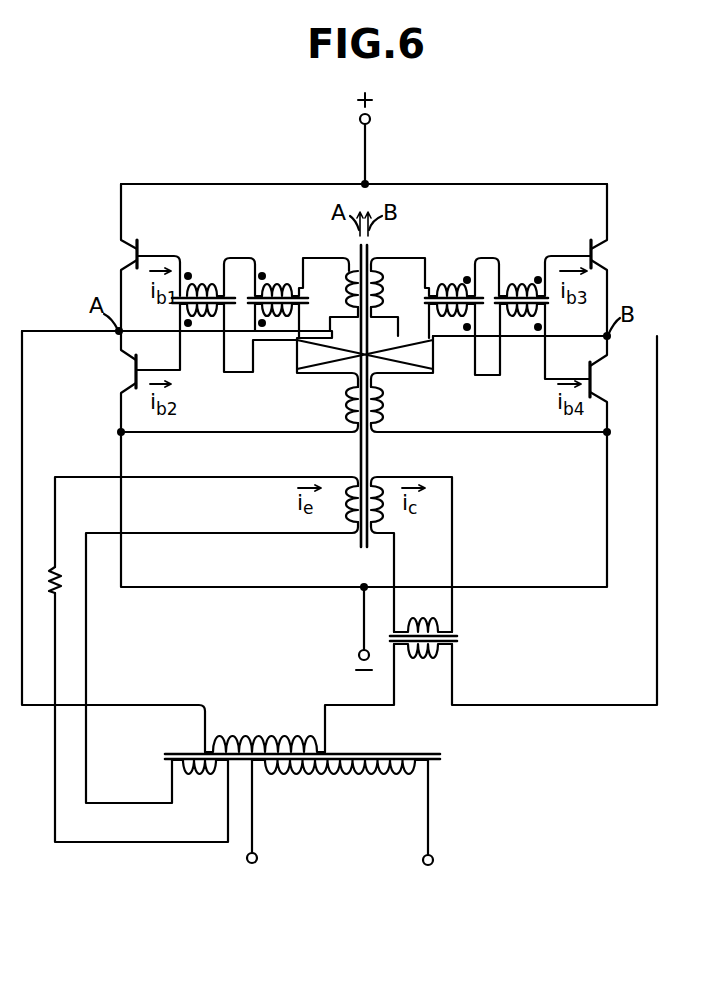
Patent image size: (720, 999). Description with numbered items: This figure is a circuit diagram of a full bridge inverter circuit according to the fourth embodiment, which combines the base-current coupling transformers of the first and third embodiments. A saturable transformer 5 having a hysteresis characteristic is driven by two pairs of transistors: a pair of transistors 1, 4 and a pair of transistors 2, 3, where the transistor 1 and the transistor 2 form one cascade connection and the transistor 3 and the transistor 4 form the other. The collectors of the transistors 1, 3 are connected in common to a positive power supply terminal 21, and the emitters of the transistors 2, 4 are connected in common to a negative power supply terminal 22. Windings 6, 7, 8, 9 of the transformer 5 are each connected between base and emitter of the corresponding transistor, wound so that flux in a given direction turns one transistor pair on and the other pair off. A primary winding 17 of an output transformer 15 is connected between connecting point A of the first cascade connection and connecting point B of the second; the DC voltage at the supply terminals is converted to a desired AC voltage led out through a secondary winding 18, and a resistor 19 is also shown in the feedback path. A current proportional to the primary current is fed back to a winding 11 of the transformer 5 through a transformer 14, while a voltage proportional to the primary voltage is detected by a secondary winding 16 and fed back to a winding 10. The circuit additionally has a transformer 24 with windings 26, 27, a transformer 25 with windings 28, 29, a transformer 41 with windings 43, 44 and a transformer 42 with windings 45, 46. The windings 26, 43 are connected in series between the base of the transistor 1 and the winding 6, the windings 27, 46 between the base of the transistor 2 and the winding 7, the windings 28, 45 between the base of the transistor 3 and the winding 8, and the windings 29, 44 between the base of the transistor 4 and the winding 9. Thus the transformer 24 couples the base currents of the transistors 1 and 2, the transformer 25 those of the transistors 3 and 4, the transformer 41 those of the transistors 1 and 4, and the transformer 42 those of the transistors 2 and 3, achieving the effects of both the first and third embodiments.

The transistor 1 is at (130, 254).
The transistor 2 is at (129, 372).
The transistor 3 is at (599, 257).
The transistor 4 is at (598, 379).
The saturable transformer 5 is at (360, 246).
The winding 6 is at (347, 282).
The winding 7 is at (346, 411).
The winding 8 is at (381, 283).
The winding 9 is at (383, 406).
The winding 10 is at (346, 498).
The winding 11 is at (381, 498).
The transformer 14 is at (457, 638).
The output transformer 15 is at (440, 757).
The secondary winding 16 is at (195, 778).
The primary winding 17 is at (255, 736).
The secondary winding 18 is at (330, 778).
The resistor 19 is at (62, 582).
The positive power supply terminal 21 is at (372, 116).
The negative power supply terminal 22 is at (359, 654).
The transformer 24 is at (183, 303).
The transformer 25 is at (548, 303).
The winding 26 is at (200, 284).
The winding 27 is at (206, 317).
The winding 28 is at (519, 284).
The winding 29 is at (521, 317).
The transformer 41 is at (308, 303).
The transformer 42 is at (425, 303).
The winding 43 is at (272, 284).
The winding 44 is at (279, 317).
The winding 45 is at (447, 284).
The winding 46 is at (449, 317).